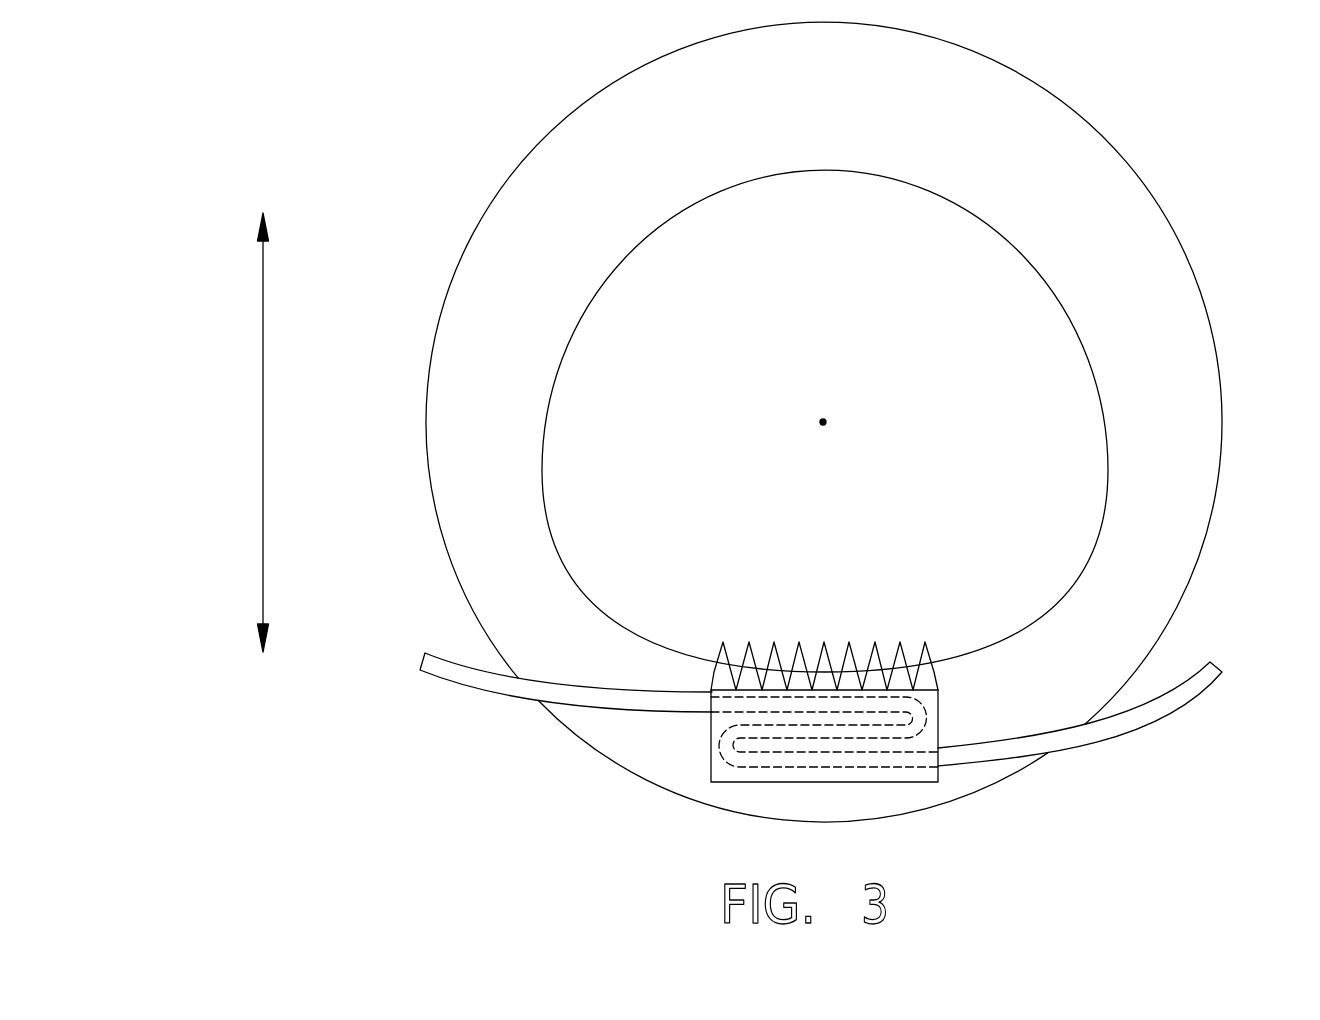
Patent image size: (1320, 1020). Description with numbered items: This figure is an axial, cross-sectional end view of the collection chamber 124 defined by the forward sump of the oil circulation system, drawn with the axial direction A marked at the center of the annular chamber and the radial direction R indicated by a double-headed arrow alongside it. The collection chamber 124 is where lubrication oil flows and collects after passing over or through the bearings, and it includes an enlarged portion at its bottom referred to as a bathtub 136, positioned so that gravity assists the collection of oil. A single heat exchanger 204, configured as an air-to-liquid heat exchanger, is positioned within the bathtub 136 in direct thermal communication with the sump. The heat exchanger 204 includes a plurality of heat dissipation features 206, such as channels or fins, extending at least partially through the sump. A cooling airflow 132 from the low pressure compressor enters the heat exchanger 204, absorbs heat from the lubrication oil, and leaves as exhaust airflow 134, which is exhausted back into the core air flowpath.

The collection chamber 124 is at (500, 517).
The cooling airflow 132 is at (488, 693).
The exhaust airflow 134 is at (1140, 723).
The bathtub 136 is at (738, 715).
The heat exchanger 204 is at (863, 783).
The heat dissipation features 206 is at (799, 645).
The axial direction A is at (827, 418).
The radial direction R is at (264, 427).